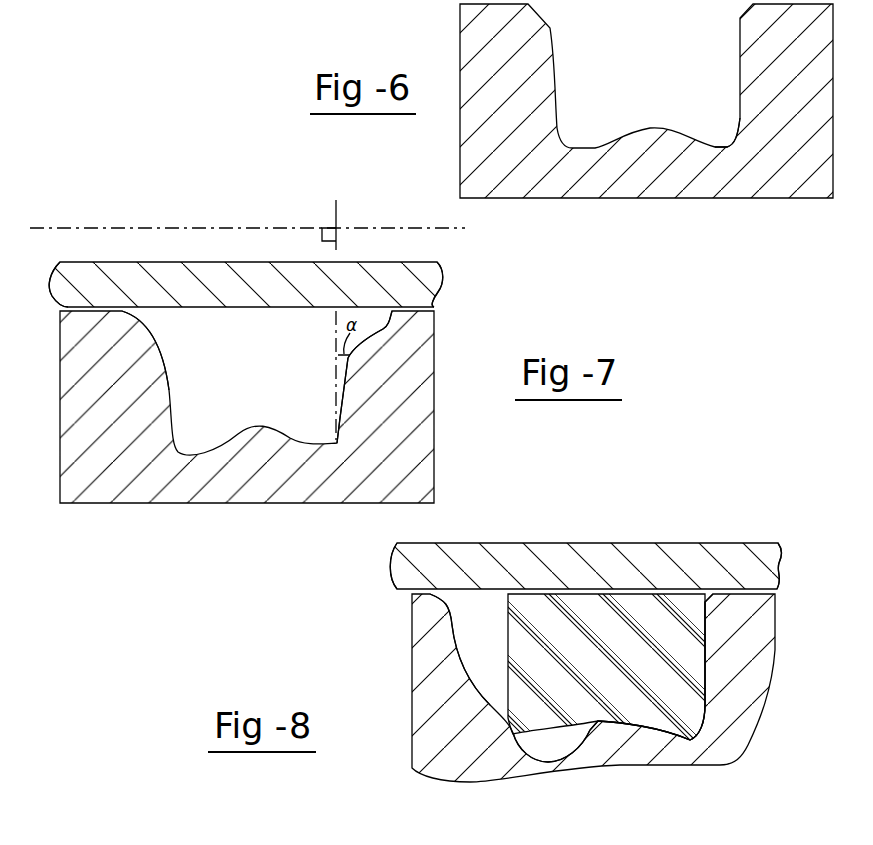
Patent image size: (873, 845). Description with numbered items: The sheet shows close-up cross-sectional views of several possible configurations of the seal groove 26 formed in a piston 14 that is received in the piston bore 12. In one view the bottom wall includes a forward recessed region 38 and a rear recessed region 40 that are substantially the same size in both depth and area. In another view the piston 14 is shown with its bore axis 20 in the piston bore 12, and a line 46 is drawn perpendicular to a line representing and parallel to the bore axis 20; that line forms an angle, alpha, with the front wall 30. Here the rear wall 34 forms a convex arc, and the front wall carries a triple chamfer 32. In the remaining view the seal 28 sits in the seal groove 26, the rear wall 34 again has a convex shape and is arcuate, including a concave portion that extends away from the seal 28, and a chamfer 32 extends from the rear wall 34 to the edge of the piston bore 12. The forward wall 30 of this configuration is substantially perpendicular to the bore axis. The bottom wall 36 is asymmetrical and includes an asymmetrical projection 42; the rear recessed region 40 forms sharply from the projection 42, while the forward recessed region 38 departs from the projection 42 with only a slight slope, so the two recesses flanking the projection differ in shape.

In FIG. 6, the piston bore 12 is at (60, 292).
In FIG. 8, the piston bore 12 is at (427, 591).
In FIG. 6, the piston 14 is at (128, 274).
In FIG. 8, the piston 14 is at (543, 554).
In FIG. 6, the bore axis 20 is at (224, 287).
In FIG. 6, the seal groove 26 is at (227, 243).
In FIG. 8, the seal groove 26 is at (652, 514).
In FIG. 8, the seal 28 is at (656, 660).
In FIG. 6, the front wall 30 is at (340, 418).
In FIG. 8, the front wall 30 is at (705, 660).
In FIG. 6, the chamfer 32 is at (388, 340).
In FIG. 8, the chamfer 32 is at (430, 594).
In FIG. 6, the rear wall 34 is at (165, 362).
In FIG. 8, the rear wall 34 is at (458, 645).
In FIG. 8, the bottom wall 36 is at (645, 752).
In FIG. 7, the forward recessed region 38 is at (729, 150).
In FIG. 8, the forward recessed region 38 is at (690, 742).
In FIG. 7, the rear recessed region 40 is at (575, 150).
In FIG. 8, the rear recessed region 40 is at (538, 762).
In FIG. 8, the asymmetrical projection 42 is at (600, 722).
In FIG. 6, the line 46 is at (336, 210).